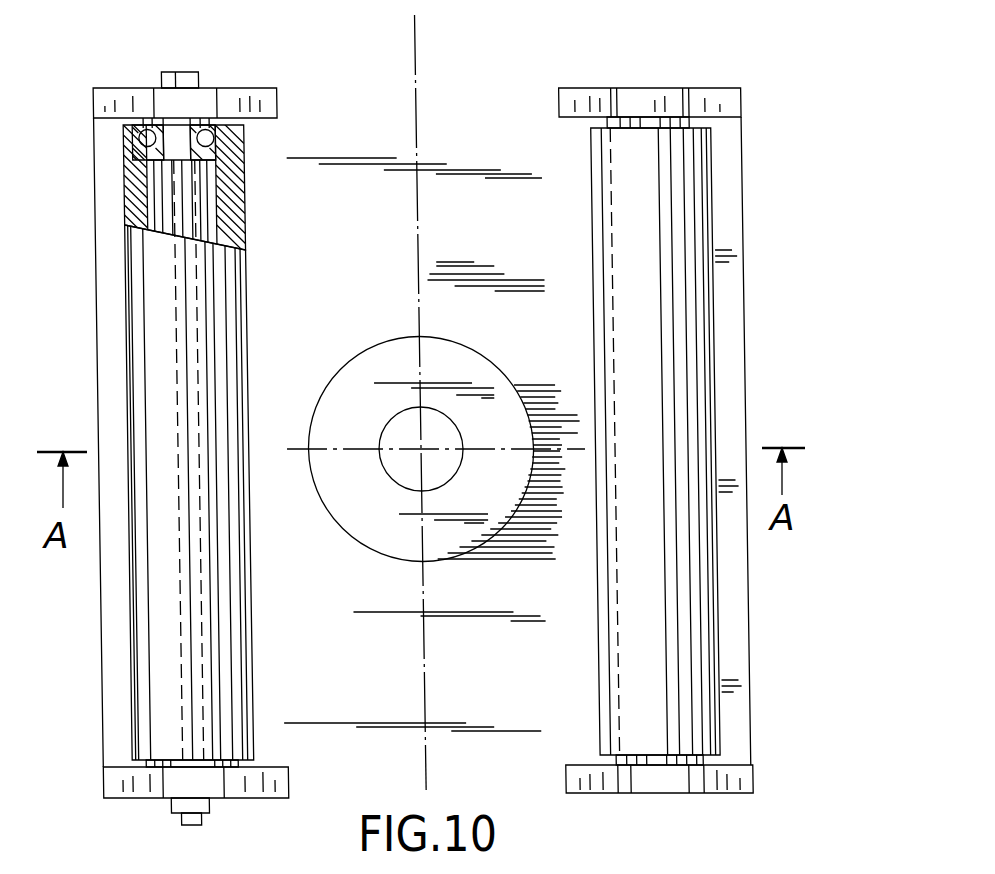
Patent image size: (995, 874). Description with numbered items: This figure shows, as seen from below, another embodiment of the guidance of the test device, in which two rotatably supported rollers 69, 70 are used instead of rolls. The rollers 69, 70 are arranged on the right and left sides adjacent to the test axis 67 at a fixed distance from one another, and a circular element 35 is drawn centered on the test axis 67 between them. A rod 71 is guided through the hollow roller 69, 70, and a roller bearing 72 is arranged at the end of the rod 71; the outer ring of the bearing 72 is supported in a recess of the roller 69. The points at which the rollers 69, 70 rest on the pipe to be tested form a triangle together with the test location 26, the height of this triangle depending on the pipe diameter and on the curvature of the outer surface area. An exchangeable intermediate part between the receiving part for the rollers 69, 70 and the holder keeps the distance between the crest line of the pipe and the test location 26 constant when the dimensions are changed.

The test location 26 is at (420, 449).
The disc 35 is at (453, 358).
The test axis 67 is at (416, 37).
The roller 69 is at (140, 320).
The roller 70 is at (690, 225).
The rod 71 is at (183, 185).
The roller bearing 72 is at (220, 125).